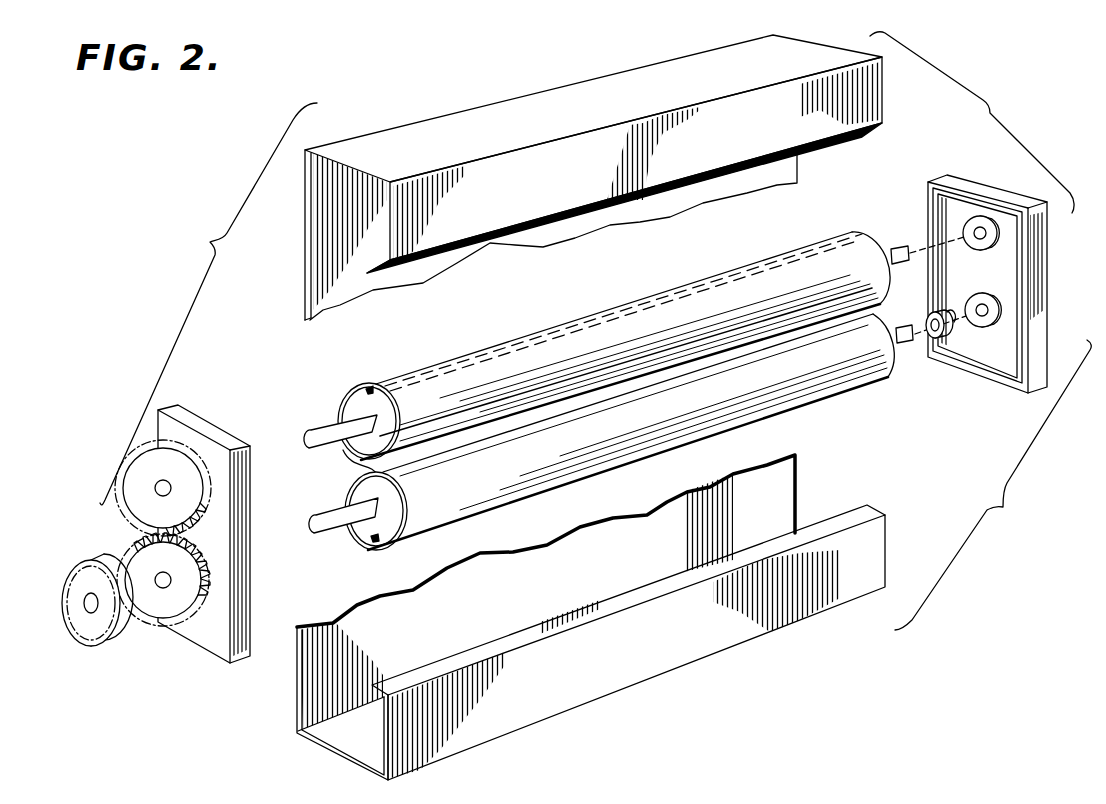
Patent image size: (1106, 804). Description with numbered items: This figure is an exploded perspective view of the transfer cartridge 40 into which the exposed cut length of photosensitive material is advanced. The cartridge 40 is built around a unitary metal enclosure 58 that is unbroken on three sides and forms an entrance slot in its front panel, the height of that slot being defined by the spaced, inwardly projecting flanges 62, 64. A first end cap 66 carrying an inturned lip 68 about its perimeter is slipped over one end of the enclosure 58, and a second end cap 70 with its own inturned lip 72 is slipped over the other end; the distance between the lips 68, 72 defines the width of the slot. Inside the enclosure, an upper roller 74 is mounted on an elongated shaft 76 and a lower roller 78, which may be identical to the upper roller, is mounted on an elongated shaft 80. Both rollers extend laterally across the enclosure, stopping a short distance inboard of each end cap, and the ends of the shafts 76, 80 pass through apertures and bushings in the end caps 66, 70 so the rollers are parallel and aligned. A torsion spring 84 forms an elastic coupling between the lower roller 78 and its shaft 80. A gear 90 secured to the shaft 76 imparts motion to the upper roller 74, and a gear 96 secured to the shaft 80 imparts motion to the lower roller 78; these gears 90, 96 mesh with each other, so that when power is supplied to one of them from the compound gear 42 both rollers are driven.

The transfer cartridge 40 is at (230, 700).
The compound gear 42 is at (90, 645).
The unitary metal enclosure 58 is at (467, 115).
The inwardly projecting flange 62 is at (487, 242).
The inwardly projecting flange 64 is at (528, 630).
The first end cap 66 is at (1011, 278).
The inturned lip 68 is at (965, 187).
The second end cap 70 is at (222, 545).
The inturned lip 72 is at (210, 427).
The upper roller 74 is at (442, 357).
The elongated shaft 76 is at (335, 417).
The lower roller 78 is at (552, 474).
The elongated shaft 80 is at (336, 532).
The torsion spring 84 is at (945, 337).
The gear 90 is at (148, 452).
The gear 96 is at (168, 613).